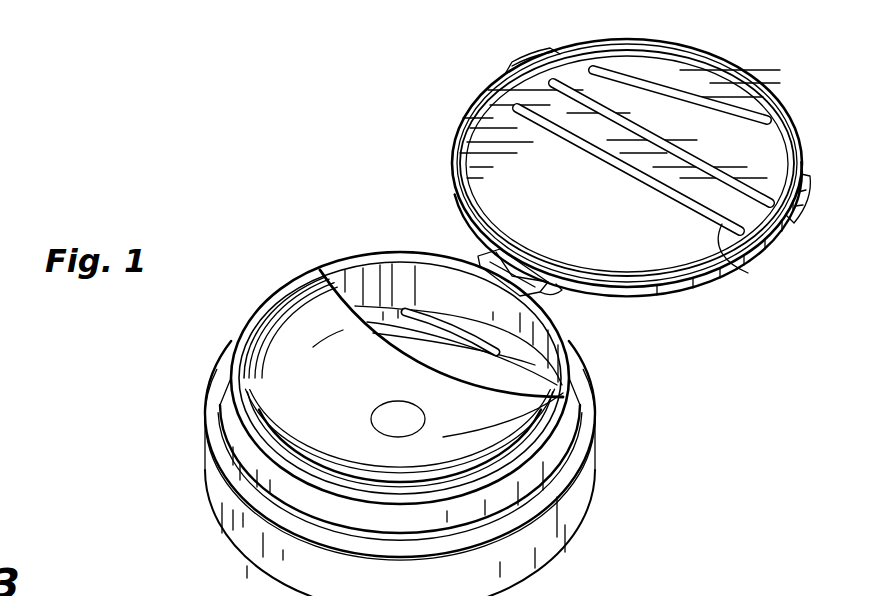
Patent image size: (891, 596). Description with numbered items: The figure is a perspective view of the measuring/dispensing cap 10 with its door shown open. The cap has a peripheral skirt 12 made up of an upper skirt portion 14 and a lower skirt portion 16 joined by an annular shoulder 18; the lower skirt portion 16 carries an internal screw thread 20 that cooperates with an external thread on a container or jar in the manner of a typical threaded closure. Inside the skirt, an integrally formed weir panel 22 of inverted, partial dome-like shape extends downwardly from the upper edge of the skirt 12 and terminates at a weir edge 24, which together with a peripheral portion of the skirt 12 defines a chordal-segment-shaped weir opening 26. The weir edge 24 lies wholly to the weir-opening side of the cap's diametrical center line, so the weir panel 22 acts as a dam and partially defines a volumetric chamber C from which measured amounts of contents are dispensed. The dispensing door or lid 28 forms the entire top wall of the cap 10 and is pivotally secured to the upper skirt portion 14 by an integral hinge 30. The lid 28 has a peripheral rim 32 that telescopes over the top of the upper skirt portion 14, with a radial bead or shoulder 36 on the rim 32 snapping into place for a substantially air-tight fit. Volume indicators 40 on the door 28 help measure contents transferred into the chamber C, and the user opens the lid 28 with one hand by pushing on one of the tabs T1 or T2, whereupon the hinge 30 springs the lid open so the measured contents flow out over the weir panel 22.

The measuring/dispensing cap 10 is at (293, 197).
The peripheral skirt 12 is at (388, 424).
The upper skirt portion 14 is at (545, 466).
The lower skirt portion 16 is at (571, 523).
The annular shoulder 18 is at (573, 395).
The internal screw thread 20 is at (458, 302).
The weir panel 22 is at (289, 323).
The weir edge 24 is at (440, 370).
The weir opening 26 is at (520, 382).
The dispensing door or lid 28 is at (590, 219).
The integral hinge 30 is at (471, 249).
The peripheral rim 32 is at (680, 284).
The radial bead or shoulder 36 is at (653, 48).
The volume indicators 40 is at (748, 273).
The chamber C is at (293, 429).
The tab T1 is at (520, 63).
The tab T2 is at (805, 186).